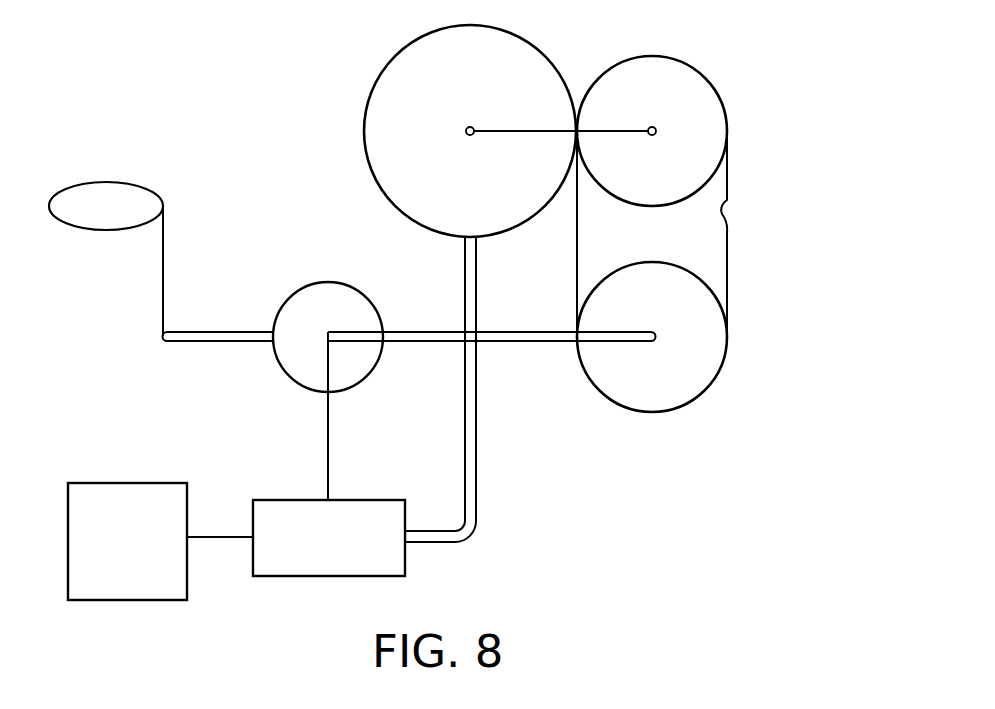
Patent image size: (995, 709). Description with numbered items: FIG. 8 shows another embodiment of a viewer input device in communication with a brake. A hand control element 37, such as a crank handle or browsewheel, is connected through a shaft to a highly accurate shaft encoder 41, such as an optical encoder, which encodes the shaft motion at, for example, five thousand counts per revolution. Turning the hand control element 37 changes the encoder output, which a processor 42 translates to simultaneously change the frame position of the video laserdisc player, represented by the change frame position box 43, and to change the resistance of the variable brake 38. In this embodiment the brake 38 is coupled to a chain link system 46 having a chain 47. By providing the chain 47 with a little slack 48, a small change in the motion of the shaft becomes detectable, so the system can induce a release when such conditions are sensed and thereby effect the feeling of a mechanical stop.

The hand control element 37 is at (72, 183).
The brake 38 is at (397, 53).
The shaft encoder 41 is at (300, 290).
The processor 42 is at (290, 500).
The change frame position box 43 is at (125, 483).
The chain link system 46 is at (745, 108).
The chain 47 is at (727, 317).
The slack 48 is at (727, 215).